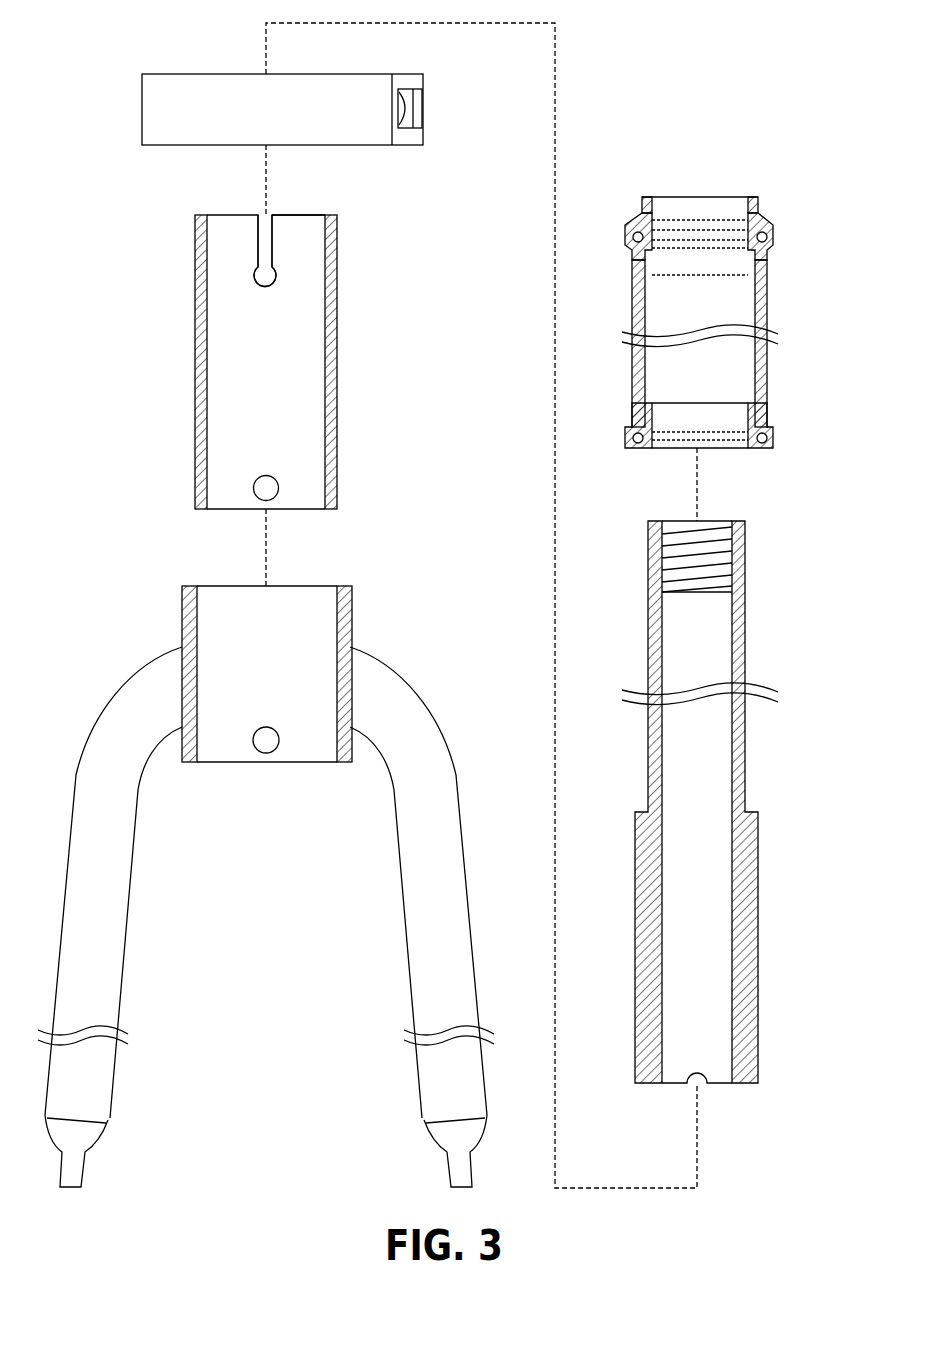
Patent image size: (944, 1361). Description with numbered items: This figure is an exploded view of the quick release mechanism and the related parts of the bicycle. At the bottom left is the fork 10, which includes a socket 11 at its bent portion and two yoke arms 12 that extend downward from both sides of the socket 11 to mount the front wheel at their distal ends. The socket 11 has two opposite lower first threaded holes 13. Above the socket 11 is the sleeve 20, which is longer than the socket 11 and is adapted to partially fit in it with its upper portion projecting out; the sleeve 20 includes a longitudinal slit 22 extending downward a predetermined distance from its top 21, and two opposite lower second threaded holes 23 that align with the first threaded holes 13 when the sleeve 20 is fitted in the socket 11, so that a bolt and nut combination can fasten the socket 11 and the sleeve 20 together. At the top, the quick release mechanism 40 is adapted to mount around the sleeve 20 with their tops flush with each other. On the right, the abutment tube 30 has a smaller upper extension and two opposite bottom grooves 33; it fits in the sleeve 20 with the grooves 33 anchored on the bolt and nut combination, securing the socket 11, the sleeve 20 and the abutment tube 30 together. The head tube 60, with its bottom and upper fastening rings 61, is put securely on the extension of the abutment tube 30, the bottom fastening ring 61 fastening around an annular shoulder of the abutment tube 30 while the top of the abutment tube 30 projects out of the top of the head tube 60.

The fork 10 is at (257, 886).
The socket 11 is at (355, 613).
The yoke arms 12 is at (78, 829).
The first threaded holes 13 is at (268, 746).
The sleeve 20 is at (194, 352).
The top 21 is at (302, 214).
The longitudinal slit 22 is at (276, 250).
The second threaded holes 23 is at (270, 494).
The abutment tube 30 is at (725, 833).
The bottom grooves 33 is at (700, 1084).
The quick release mechanism 40 is at (128, 110).
The head tube 60 is at (768, 365).
The fastening rings 61 is at (770, 242).